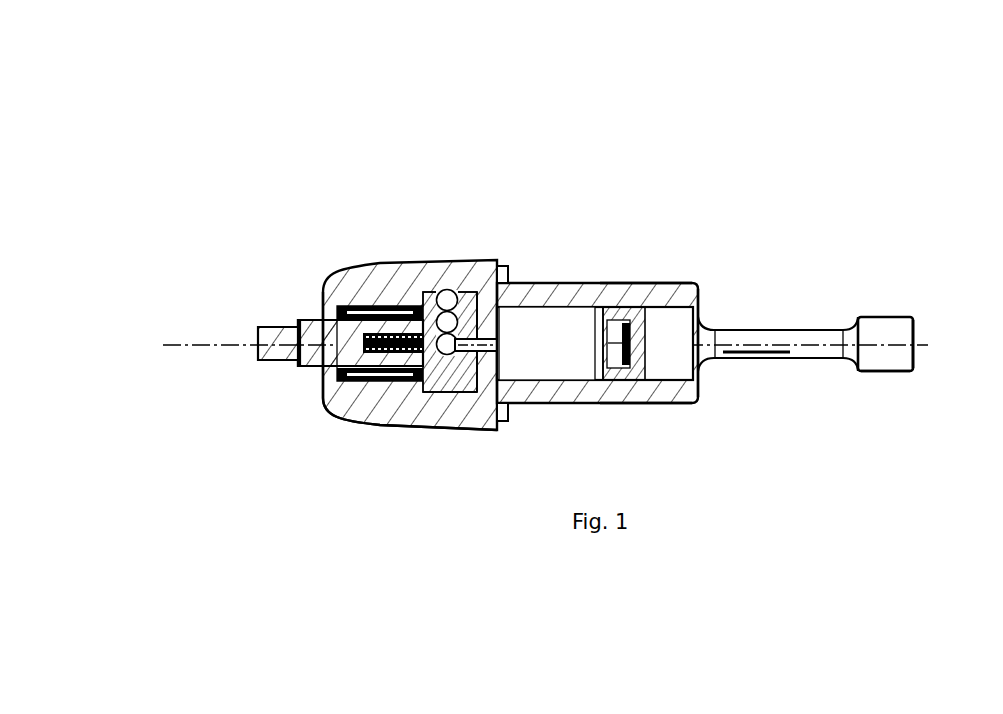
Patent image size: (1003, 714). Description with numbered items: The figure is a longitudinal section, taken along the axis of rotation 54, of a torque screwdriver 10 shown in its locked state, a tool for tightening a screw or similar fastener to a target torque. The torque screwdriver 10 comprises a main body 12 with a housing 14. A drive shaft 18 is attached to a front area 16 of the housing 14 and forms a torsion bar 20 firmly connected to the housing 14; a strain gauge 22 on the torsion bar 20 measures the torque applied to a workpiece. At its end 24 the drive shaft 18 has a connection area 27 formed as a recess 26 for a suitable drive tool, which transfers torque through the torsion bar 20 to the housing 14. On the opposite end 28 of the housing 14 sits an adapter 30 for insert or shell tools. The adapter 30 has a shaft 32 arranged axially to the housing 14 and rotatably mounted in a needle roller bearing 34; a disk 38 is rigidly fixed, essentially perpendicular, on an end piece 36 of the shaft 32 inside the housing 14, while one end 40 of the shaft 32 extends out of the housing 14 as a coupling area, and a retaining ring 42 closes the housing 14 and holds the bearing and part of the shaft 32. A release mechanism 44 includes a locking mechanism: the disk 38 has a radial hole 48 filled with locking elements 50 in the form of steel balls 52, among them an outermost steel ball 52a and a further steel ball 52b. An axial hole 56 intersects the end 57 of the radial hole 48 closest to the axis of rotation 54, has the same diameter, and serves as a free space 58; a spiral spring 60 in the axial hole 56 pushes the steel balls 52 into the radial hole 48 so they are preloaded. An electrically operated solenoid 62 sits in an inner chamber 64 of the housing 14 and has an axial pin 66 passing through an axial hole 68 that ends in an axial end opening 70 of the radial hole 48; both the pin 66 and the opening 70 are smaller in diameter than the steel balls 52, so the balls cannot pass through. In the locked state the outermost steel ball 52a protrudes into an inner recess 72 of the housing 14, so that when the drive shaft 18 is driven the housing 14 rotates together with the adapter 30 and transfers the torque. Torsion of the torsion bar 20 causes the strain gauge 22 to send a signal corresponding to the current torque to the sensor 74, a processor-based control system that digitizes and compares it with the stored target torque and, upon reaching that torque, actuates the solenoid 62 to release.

The torque screwdriver 10 is at (543, 322).
The main body 12 is at (623, 376).
The housing 14 is at (670, 235).
The front area 16 is at (740, 305).
The drive shaft 18 is at (778, 317).
The torsion bar 20 is at (819, 391).
The strain gauge 22 is at (782, 399).
The end 24 is at (906, 310).
The recess 26 is at (956, 333).
The connection area 27 is at (931, 394).
The end 28 is at (365, 468).
The adapter 30 is at (301, 295).
The shaft 32 is at (304, 401).
The needle roller bearing 34 is at (396, 473).
The end piece 36 is at (360, 464).
The disk 38 is at (464, 473).
The end 40 is at (234, 320).
The retaining ring 42 is at (270, 386).
The release mechanism 44 is at (488, 236).
The radial hole 48 is at (517, 276).
The locking elements 50 is at (412, 229).
The steel balls 52 is at (387, 242).
The outermost steel ball 52a is at (391, 211).
The steel ball 52b is at (486, 425).
The axis of rotation 54 is at (506, 365).
The axial hole 56 is at (388, 291).
The end 57 is at (214, 385).
The free space 58 is at (383, 345).
The spiral spring 60 is at (353, 275).
The solenoid 62 is at (572, 379).
The inner chamber 64 is at (595, 308).
The axial pin 66 is at (529, 426).
The axial hole 68 is at (533, 240).
The axial end opening 70 is at (492, 437).
The inner recess 72 is at (489, 214).
The sensor 74 is at (668, 452).